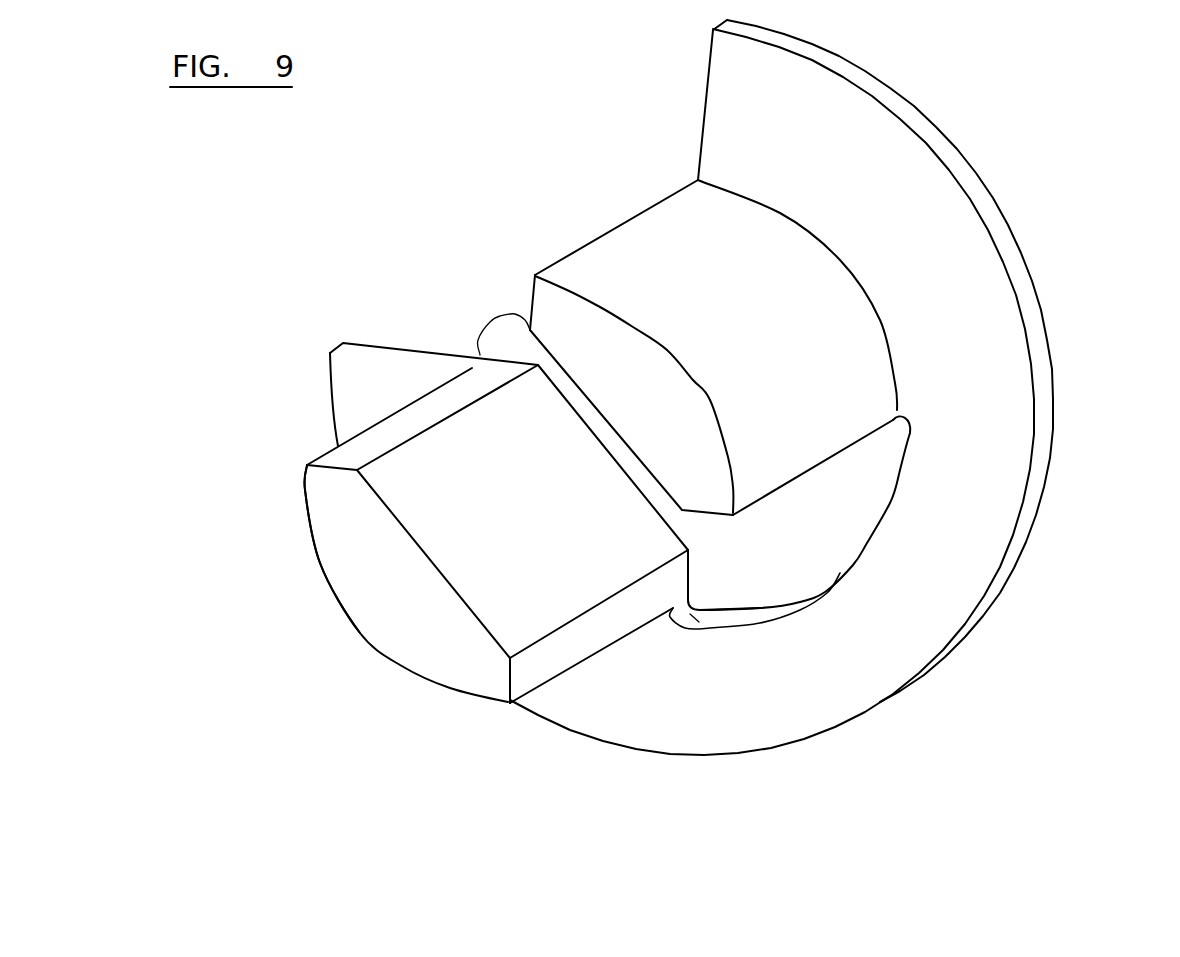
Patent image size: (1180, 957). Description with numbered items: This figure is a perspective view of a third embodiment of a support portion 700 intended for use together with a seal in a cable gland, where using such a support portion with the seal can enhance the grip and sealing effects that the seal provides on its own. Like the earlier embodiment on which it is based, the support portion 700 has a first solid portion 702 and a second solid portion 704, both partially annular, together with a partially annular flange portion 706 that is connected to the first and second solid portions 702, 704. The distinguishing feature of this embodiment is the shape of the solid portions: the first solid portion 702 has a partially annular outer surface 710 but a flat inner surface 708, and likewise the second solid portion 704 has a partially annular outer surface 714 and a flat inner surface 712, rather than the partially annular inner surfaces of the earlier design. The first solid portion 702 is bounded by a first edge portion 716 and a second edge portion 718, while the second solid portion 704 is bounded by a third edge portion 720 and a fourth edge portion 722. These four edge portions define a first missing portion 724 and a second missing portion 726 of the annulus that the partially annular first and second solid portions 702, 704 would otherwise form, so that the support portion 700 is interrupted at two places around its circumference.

The support portion 700 is at (1012, 628).
The first solid portion 702 is at (665, 410).
The second solid portion 704 is at (395, 600).
The flange portion 706 is at (887, 215).
The flat inner surface 708 is at (826, 473).
The outer surface 710 is at (662, 270).
The flat inner surface 712 is at (467, 470).
The outer surface 714 is at (308, 562).
The first edge portion 716 is at (694, 522).
The second edge portion 718 is at (524, 299).
The third edge portion 720 is at (555, 660).
The fourth edge portion 722 is at (387, 438).
The first missing portion 724 is at (495, 318).
The second missing portion 726 is at (780, 490).